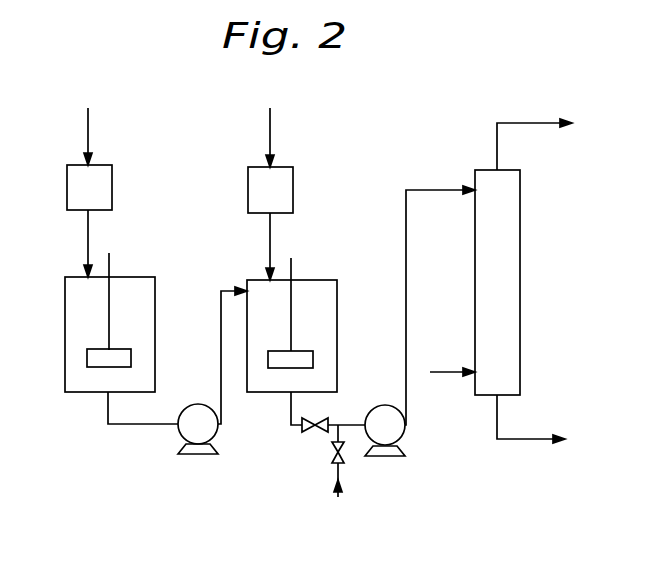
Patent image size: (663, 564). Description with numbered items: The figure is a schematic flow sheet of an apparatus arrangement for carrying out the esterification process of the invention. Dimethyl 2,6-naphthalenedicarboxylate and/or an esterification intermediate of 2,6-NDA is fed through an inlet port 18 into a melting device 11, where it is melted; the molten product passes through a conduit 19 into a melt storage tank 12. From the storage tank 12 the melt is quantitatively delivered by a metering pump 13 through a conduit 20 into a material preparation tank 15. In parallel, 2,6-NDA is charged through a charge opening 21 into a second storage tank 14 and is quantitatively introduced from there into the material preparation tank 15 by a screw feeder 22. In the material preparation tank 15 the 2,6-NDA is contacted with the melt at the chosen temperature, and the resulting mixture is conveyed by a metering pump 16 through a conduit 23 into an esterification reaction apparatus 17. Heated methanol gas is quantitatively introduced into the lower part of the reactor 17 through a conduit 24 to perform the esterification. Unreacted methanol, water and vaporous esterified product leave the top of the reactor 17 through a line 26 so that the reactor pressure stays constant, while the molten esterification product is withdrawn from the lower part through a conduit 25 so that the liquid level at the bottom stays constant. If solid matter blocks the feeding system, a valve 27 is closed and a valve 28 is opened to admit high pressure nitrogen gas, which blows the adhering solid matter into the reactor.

The melting device 11 is at (98, 201).
The storage tank 12 is at (139, 326).
The metering pump 13 is at (216, 430).
The storage tank 14 is at (281, 203).
The material preparation tank 15 is at (323, 326).
The metering pump 16 is at (399, 434).
The esterification reaction apparatus 17 is at (504, 291).
The inlet port 18 is at (88, 120).
The conduit 19 is at (88, 235).
The conduit 20 is at (221, 328).
The charge opening 21 is at (270, 122).
The screw feeder 22 is at (270, 237).
The conduit 23 is at (406, 255).
The conduit 24 is at (433, 372).
The conduit 25 is at (540, 439).
The line 26 is at (540, 123).
The valve 27 is at (305, 432).
The valve 28 is at (332, 460).